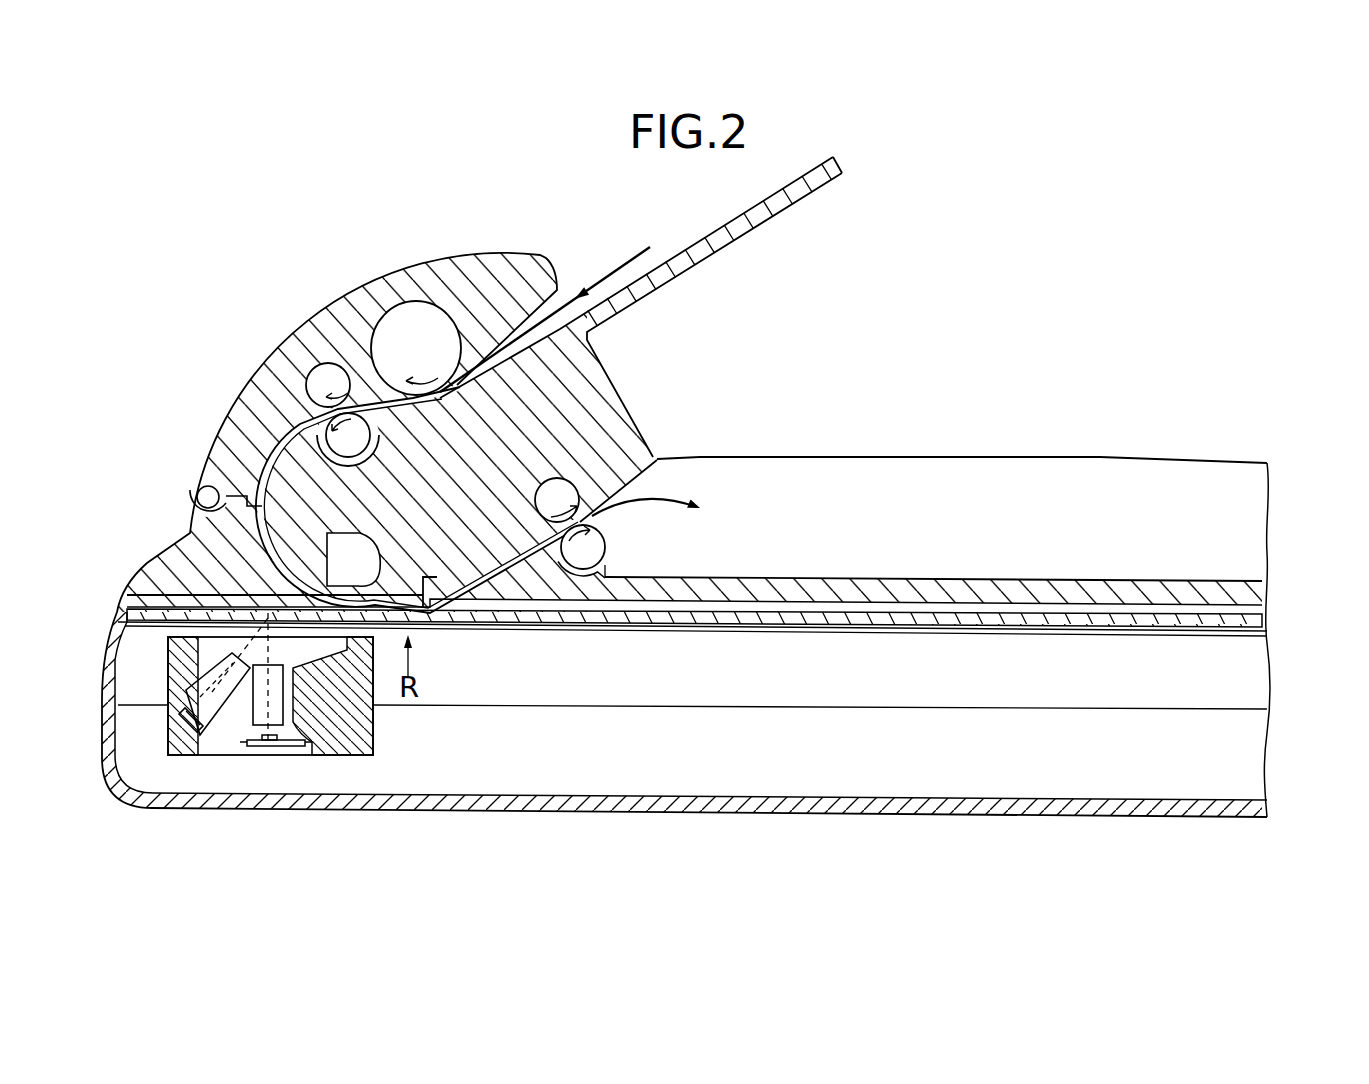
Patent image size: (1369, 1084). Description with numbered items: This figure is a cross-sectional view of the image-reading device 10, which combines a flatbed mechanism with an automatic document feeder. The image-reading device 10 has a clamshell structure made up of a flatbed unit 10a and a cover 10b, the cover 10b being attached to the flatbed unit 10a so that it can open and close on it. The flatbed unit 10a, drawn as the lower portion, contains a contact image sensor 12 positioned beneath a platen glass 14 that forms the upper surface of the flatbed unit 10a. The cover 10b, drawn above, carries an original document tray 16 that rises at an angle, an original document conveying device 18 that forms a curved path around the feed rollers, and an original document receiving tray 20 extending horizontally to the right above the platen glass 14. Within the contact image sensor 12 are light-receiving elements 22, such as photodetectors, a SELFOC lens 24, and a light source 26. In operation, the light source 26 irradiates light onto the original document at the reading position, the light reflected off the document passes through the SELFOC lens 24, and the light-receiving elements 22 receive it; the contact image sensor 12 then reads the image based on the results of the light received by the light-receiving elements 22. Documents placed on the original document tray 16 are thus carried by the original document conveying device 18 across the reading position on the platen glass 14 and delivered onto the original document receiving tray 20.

The image-reading device 10 is at (972, 312).
The flatbed unit 10a is at (1235, 746).
The cover 10b is at (1235, 522).
The contact image sensor 12 is at (178, 669).
The platen glass 14 is at (418, 620).
The original document tray 16 is at (705, 247).
The original document conveying device 18 is at (257, 372).
The original document receiving tray 20 is at (801, 578).
The light-receiving elements 22 is at (265, 743).
The SELFOC lens 24 is at (281, 700).
The light source 26 is at (182, 733).